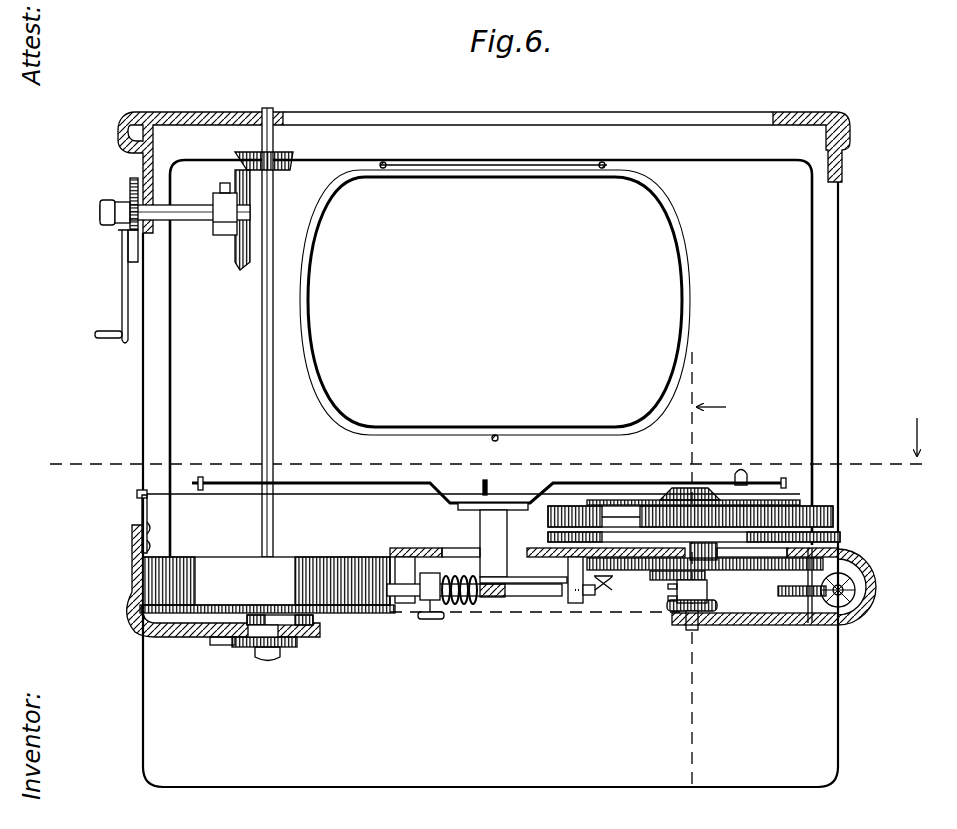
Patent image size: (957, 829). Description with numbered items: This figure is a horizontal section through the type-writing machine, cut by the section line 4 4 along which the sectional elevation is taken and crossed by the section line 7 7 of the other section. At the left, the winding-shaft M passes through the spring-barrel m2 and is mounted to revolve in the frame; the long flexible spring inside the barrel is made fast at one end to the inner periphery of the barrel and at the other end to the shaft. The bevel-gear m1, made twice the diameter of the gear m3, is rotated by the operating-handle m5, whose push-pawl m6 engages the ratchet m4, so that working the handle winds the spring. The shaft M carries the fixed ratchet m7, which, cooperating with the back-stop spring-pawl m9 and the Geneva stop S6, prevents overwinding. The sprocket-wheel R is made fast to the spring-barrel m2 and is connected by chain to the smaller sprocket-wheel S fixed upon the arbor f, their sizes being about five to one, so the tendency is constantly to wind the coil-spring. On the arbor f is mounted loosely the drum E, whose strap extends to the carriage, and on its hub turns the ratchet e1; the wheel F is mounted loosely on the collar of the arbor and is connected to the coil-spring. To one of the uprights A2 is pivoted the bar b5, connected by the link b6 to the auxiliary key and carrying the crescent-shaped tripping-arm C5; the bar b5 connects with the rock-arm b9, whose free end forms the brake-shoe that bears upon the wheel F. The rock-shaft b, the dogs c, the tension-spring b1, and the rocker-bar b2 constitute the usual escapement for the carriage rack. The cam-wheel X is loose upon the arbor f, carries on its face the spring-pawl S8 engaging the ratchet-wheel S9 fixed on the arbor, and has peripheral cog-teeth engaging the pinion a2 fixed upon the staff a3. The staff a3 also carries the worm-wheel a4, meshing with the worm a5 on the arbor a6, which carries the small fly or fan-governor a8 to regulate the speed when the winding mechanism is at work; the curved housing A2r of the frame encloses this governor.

The winding-shaft M is at (263, 378).
The bevel-gear m1 is at (238, 262).
The spring-barrel m2 is at (267, 585).
The gear m3 is at (294, 160).
The ratchet m4 is at (130, 180).
The operating-handle m5 is at (122, 298).
The push-pawl m6 is at (128, 256).
The ratchet m7 is at (290, 648).
The back-stop spring-pawl m9 is at (222, 646).
The section line 4 4 is at (495, 447).
The section line 7 7 is at (698, 568).
The rock-shaft b is at (548, 596).
The tension-spring b1 is at (438, 602).
The rocker-bar b2 is at (386, 481).
The bar b5 is at (372, 495).
The link b6 is at (485, 481).
The rock-arm b9 is at (742, 468).
The dogs c is at (495, 598).
The crescent-shaped tripping-arm C5 is at (770, 500).
The drum E is at (566, 505).
The ratchet e1 is at (636, 504).
The wheel F is at (545, 533).
The supporting and connecting uprights A2 is at (132, 607).
The frame casing housing A2r is at (876, 592).
The sprocket-wheel R is at (133, 630).
The sprocket-wheel S is at (676, 612).
The Geneva stop S6 is at (306, 624).
The spring-pawl S8 is at (712, 572).
The ratchet-wheel S9 is at (661, 586).
The cam-wheel X is at (603, 589).
The arbor f is at (690, 630).
The pinion a2 is at (780, 588).
The staff a3 is at (826, 560).
The worm-wheel a4 is at (792, 610).
The worm a5 is at (866, 612).
The arbor a6 is at (856, 582).
The fly or fan-governor a8 is at (850, 626).